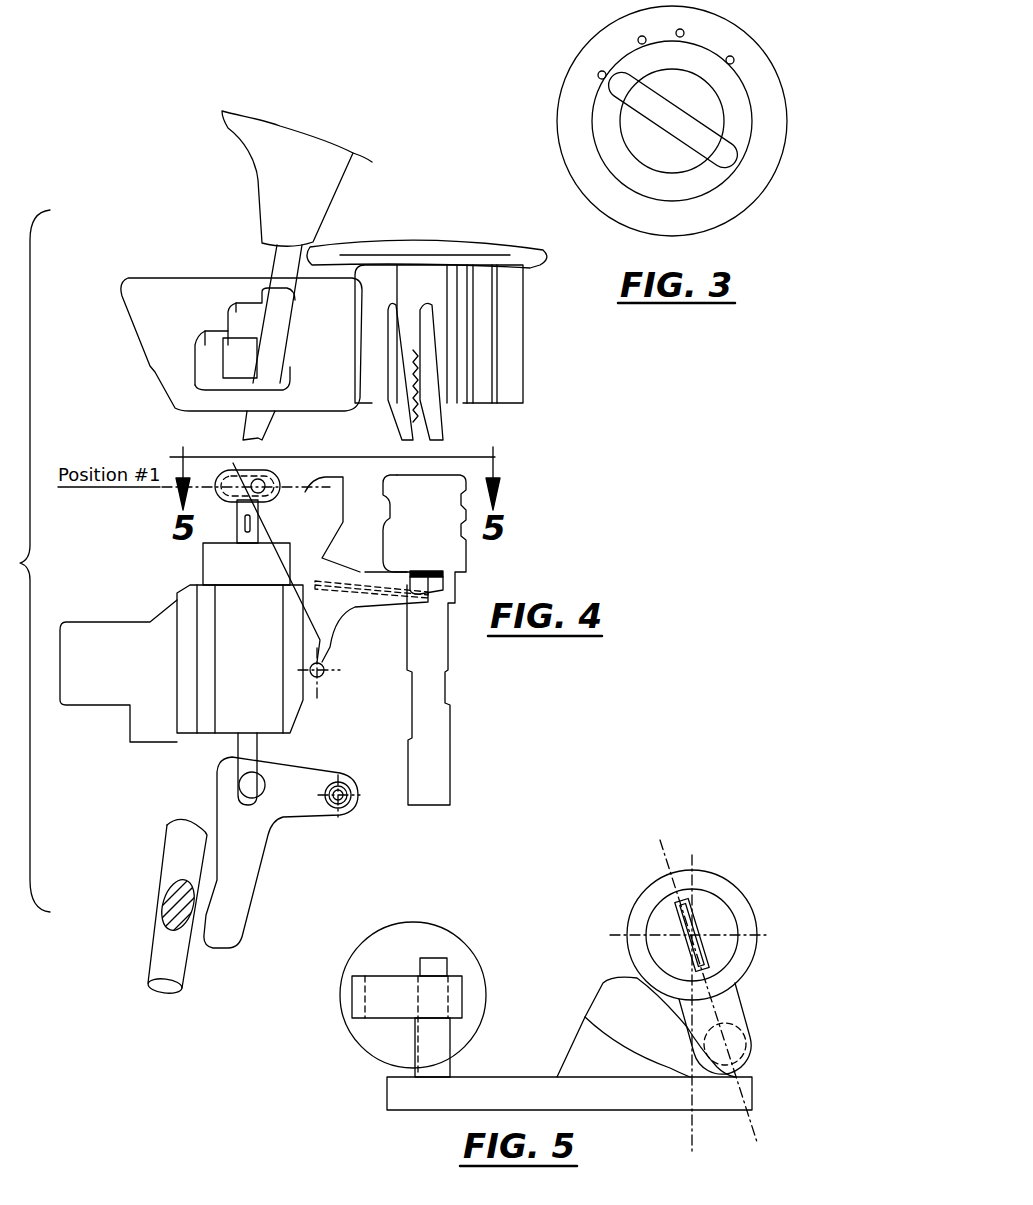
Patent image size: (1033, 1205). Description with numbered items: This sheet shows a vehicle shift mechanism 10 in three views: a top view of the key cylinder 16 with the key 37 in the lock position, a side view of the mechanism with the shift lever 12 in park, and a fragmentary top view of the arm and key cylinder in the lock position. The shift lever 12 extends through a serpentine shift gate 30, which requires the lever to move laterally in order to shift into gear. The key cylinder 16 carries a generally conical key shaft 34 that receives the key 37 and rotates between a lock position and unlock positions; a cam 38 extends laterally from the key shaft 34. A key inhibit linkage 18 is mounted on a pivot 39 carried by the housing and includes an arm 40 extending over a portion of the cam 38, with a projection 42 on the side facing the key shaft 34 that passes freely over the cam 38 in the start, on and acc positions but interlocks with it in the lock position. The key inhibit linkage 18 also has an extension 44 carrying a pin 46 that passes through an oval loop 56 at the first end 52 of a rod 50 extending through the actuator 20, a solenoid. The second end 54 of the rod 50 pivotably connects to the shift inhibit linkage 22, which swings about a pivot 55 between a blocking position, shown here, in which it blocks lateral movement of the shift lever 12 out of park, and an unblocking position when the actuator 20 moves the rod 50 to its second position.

In FIG. 4, the shift mechanism 10 is at (121, 148).
In FIG. 4, the shift lever 12 is at (280, 262).
In FIG. 3, the key cylinder 16 is at (788, 98).
In FIG. 4, the key inhibit linkage 18 is at (335, 532).
In FIG. 4, the actuator 20 is at (262, 664).
In FIG. 4, the shift inhibit linkage 22 is at (247, 878).
In FIG. 4, the serpentine shift gate 30 is at (160, 290).
In FIG. 4, the key shaft 34 is at (458, 557).
In FIG. 5, the key shaft 34 is at (715, 880).
In FIG. 3, the key 37 is at (625, 107).
In FIG. 4, the cam 38 is at (443, 576).
In FIG. 5, the cam 38 is at (730, 1005).
In FIG. 4, the pivot 39 is at (323, 676).
In FIG. 4, the arm 40 is at (353, 607).
In FIG. 5, the arm 40 is at (638, 1097).
In FIG. 4, the projection 42 is at (362, 573).
In FIG. 5, the projection 42 is at (618, 998).
In FIG. 4, the extension 44 is at (318, 493).
In FIG. 4, the pin 46 is at (268, 482).
In FIG. 5, the pin 46 is at (435, 965).
In FIG. 4, the rod 50 is at (237, 743).
In FIG. 4, the first end 52 is at (237, 522).
In FIG. 4, the second end 54 is at (260, 785).
In FIG. 4, the pivot 55 is at (343, 805).
In FIG. 4, the oval loop 56 is at (222, 472).
In FIG. 5, the oval loop 56 is at (388, 985).